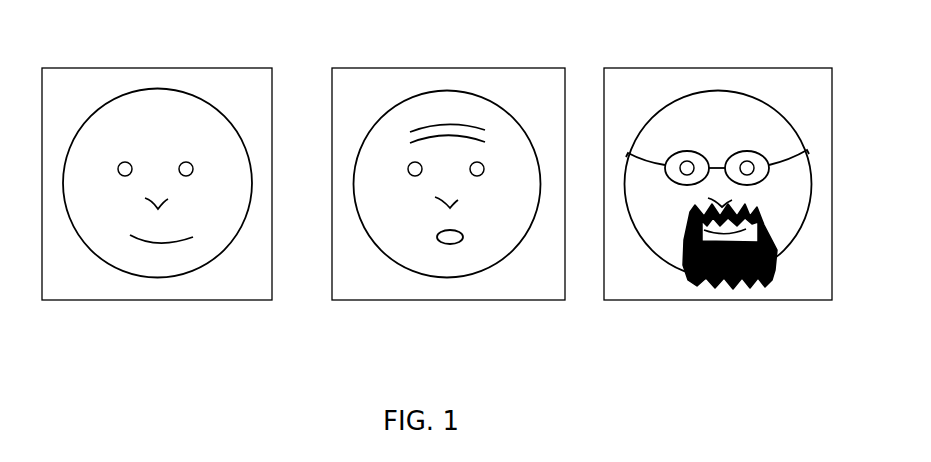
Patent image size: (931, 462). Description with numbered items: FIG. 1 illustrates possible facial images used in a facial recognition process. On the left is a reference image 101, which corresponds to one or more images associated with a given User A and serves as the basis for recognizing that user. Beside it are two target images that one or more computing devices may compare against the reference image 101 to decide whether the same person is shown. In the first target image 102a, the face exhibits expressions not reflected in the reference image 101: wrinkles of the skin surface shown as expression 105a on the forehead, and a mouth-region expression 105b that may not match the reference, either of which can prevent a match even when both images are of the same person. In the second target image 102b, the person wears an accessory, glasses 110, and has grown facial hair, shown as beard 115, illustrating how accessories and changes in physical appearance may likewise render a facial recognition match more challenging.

The reference image 101 is at (157, 201).
The target image 102a is at (448, 201).
The target image 102b is at (718, 201).
The expression 105a is at (453, 123).
The expression 105b is at (463, 240).
The glasses 110 is at (698, 152).
The beard 115 is at (770, 270).